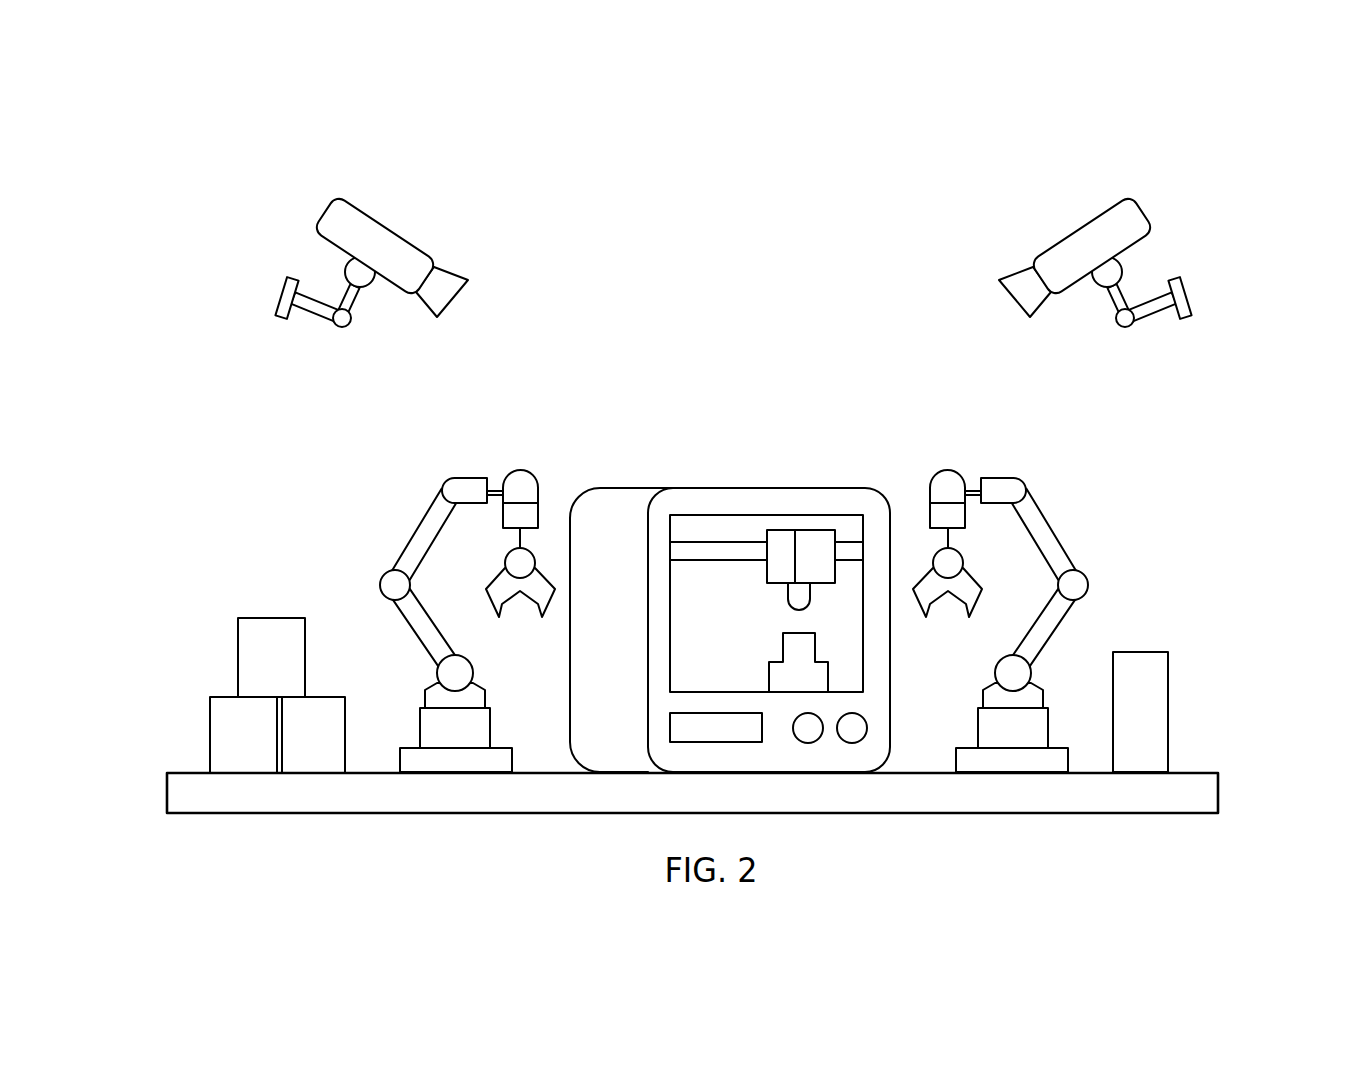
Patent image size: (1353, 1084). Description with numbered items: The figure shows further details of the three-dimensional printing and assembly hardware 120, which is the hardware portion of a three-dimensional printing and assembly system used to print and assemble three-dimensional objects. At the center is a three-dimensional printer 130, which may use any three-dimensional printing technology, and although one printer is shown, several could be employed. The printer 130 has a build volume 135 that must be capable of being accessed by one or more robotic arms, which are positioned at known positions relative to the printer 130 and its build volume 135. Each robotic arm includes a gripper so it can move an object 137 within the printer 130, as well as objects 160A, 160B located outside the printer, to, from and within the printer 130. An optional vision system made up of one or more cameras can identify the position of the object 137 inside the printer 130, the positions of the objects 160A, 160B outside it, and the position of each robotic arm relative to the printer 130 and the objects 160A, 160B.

The 3D printing and assembly hardware 120 is at (875, 195).
The 3D printer 130 is at (762, 598).
The build volume 135 is at (766, 603).
The object 137 is at (815, 644).
The object 160A is at (237, 667).
The object 160B is at (1168, 695).